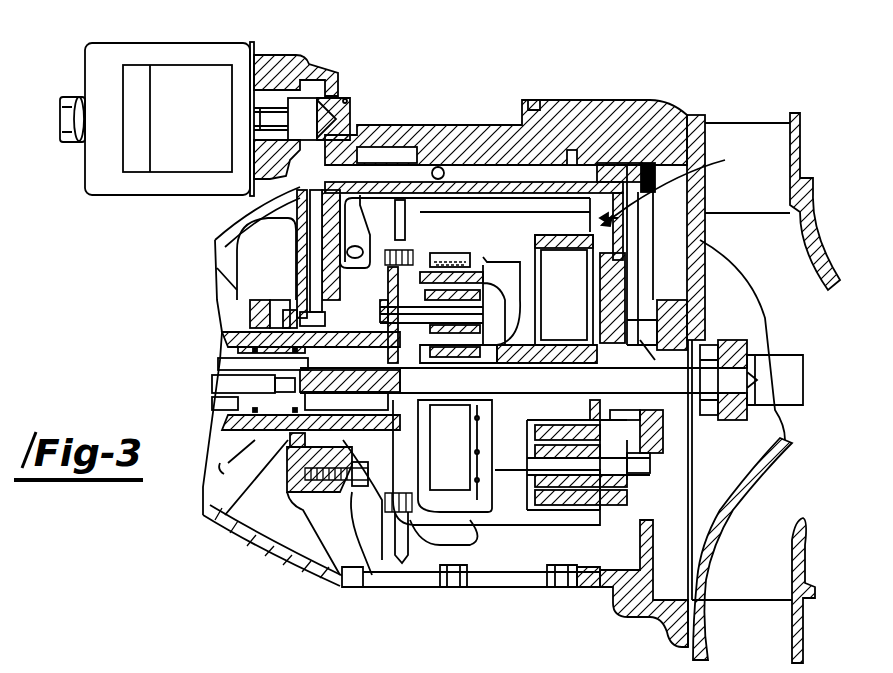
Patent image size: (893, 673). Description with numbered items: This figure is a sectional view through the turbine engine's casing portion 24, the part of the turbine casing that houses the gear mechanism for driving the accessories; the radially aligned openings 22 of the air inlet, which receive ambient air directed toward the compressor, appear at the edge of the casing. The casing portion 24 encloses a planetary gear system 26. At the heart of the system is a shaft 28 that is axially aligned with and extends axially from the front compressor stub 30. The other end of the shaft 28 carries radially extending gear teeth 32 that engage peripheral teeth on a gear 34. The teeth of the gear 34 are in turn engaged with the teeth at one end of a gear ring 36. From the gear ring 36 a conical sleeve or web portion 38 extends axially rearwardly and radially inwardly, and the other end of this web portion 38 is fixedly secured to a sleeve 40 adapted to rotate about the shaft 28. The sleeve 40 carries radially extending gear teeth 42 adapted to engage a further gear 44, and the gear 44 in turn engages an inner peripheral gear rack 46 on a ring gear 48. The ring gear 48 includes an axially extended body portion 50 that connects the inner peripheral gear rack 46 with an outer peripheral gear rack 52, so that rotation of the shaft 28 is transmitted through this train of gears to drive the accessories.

The radially aligned openings 22 is at (752, 133).
The casing portion 24 is at (302, 556).
The planetary gear system 26 is at (677, 185).
The shaft 28 is at (678, 424).
The front compressor stub 30 is at (752, 360).
The gear teeth 32 is at (438, 392).
The gear 34 is at (437, 358).
The gear ring 36 is at (438, 254).
The conical sleeve or web portion 38 is at (515, 300).
The sleeve 40 is at (645, 300).
The gear teeth 42 is at (575, 336).
The gear 44 is at (593, 258).
The inner peripheral gear rack 46 is at (586, 263).
The ring gear 48 is at (693, 115).
The axially extended body portion 50 is at (493, 230).
The outer peripheral gear rack 52 is at (392, 192).